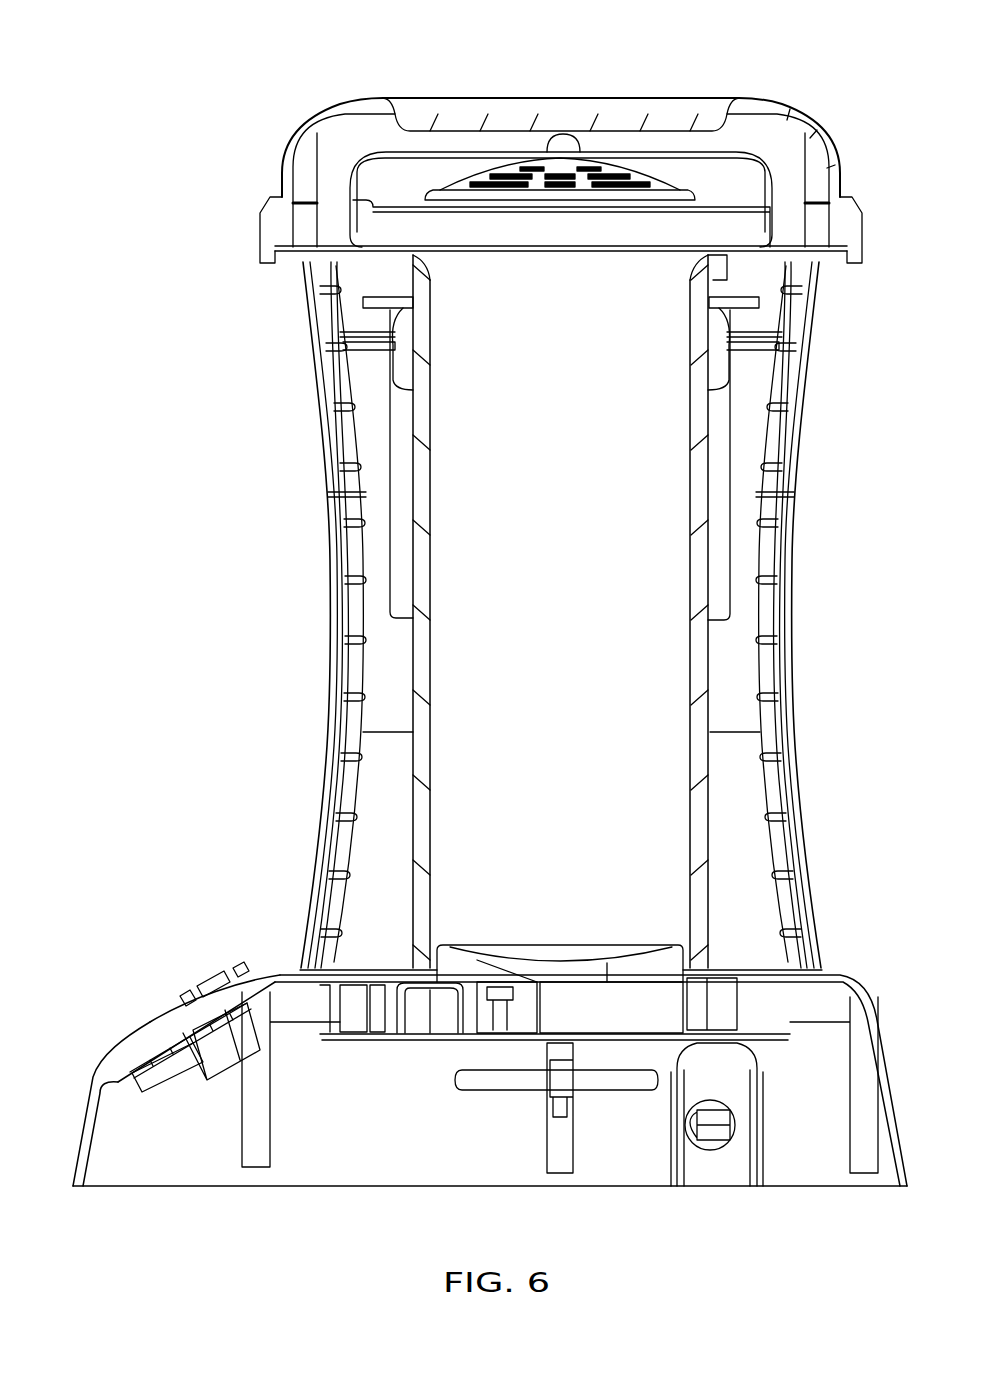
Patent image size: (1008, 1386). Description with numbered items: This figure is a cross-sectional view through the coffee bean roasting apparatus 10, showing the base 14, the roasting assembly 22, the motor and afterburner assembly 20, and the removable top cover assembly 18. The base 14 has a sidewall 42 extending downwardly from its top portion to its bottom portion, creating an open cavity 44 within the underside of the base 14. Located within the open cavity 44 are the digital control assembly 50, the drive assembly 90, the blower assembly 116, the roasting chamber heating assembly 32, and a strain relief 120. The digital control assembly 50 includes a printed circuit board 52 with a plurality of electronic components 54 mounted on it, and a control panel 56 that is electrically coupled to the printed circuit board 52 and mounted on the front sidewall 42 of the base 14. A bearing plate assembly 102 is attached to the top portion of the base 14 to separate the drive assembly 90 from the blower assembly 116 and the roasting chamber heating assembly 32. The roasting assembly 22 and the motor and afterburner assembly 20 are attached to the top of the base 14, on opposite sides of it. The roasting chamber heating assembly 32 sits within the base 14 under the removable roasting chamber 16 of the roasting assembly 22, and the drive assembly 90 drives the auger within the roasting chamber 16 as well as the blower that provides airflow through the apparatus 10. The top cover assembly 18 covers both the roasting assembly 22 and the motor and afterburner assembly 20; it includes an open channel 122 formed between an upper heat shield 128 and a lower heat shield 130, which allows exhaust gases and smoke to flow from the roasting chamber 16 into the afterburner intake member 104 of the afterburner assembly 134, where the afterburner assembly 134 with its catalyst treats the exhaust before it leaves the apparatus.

The roasting apparatus 10 is at (297, 43).
The base 14 is at (858, 981).
The roasting chamber 16 is at (423, 712).
The top cover assembly 18 is at (378, 98).
The motor and afterburner assembly 20 is at (790, 412).
The roasting assembly 22 is at (710, 688).
The roasting chamber heating assembly 32 is at (420, 1043).
The sidewall 42 is at (93, 1077).
The open cavity 44 is at (370, 1162).
The digital control assembly 50 is at (200, 1060).
The printed circuit board 52 is at (130, 1077).
The electronic components 54 is at (213, 1075).
The control panel 56 is at (127, 1037).
The drive assembly 90 is at (614, 1093).
The bearing plate assembly 102 is at (768, 1040).
The afterburner intake member 104 is at (473, 176).
The blower assembly 116 is at (653, 993).
The strain relief 120 is at (720, 1150).
The open channel 122 is at (737, 187).
The upper heat shield 128 is at (742, 108).
The lower heat shield 130 is at (776, 248).
The afterburner assembly 134 is at (388, 420).